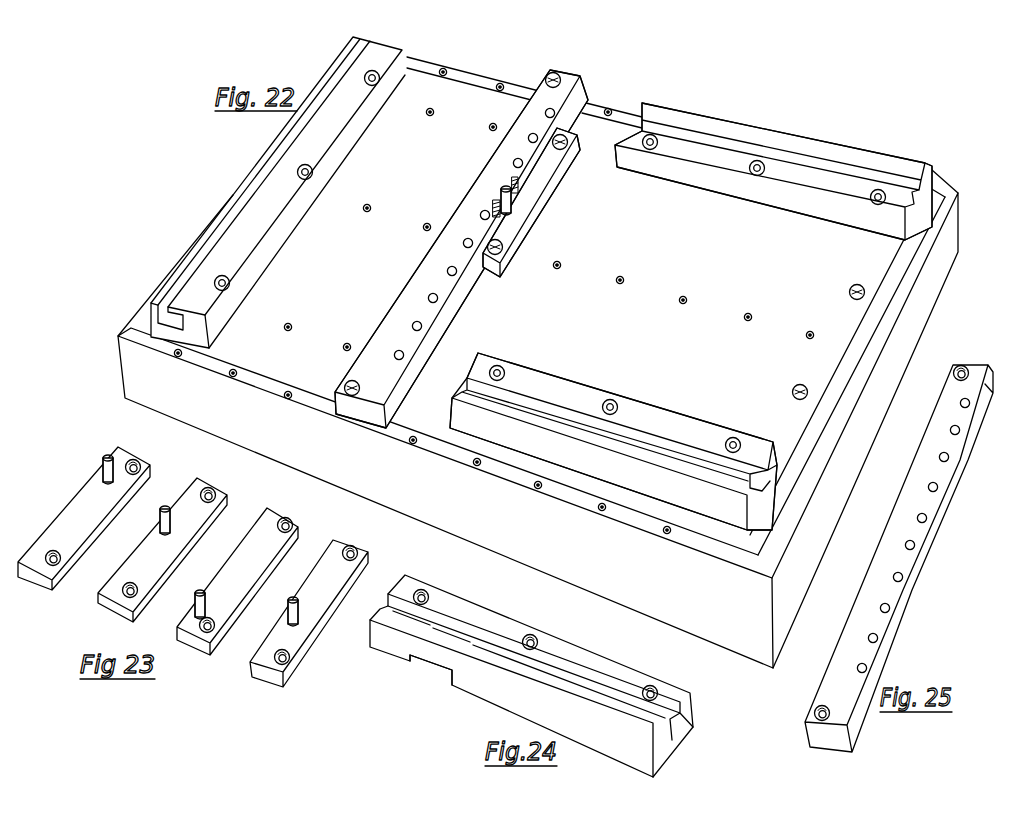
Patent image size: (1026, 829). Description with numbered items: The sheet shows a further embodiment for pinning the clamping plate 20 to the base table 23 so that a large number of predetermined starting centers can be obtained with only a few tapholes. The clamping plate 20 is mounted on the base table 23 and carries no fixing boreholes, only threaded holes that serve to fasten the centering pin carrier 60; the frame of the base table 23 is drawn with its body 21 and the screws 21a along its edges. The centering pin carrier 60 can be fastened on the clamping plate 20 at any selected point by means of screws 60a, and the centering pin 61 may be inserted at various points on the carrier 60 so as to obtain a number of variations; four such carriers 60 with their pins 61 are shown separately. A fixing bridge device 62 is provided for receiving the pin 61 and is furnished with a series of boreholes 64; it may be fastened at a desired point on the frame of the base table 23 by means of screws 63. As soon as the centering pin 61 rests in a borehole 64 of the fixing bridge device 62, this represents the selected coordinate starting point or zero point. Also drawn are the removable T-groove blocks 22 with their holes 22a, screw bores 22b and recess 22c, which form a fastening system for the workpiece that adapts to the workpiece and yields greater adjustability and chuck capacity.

In FIG. 22, the clamping plate 20 is at (591, 126).
In FIG. 22, the frame 21 is at (302, 443).
In FIG. 22, the fastening screws 21a is at (447, 70).
In FIG. 22, the removable T-groove 22 is at (252, 192).
In FIG. 24, the removable T-groove 22 is at (525, 700).
In FIG. 22, the holes in base plate 22a is at (370, 206).
In FIG. 24, the screw bores 22b is at (647, 687).
In FIG. 24, the recess 22c is at (427, 665).
In FIG. 22, the base table 23 is at (893, 316).
In FIG. 22, the centering pin carrier 60 is at (532, 190).
In FIG. 23, the centering pin carrier 60 is at (95, 498).
In FIG. 22, the screws 60a is at (499, 257).
In FIG. 22, the centering pin 61 is at (503, 186).
In FIG. 23, the centering pin 61 is at (104, 456).
In FIG. 22, the fixing bridge device 62 is at (563, 82).
In FIG. 25, the fixing bridge device 62 is at (842, 705).
In FIG. 25, the screw 63 is at (820, 718).
In FIG. 22, the boreholes 64 is at (452, 270).
In FIG. 25, the boreholes 64 is at (912, 545).